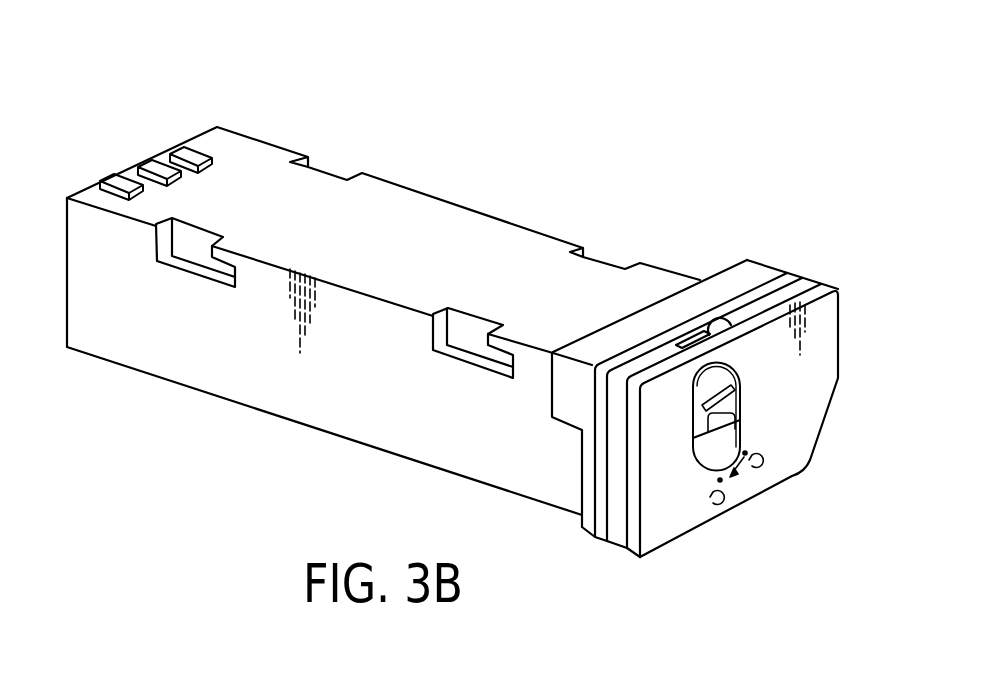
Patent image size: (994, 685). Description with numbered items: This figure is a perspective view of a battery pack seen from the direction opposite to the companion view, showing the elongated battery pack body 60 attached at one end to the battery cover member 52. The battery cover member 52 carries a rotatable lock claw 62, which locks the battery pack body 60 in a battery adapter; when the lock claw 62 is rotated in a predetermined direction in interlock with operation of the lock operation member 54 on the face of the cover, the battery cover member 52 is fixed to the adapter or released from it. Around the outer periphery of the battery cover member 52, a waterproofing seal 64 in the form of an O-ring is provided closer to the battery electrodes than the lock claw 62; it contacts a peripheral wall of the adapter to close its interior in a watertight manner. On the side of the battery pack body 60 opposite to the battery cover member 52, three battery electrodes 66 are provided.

The battery cover member 52 is at (658, 517).
The lock operation member 54 is at (733, 403).
The battery pack body 60 is at (497, 190).
The lock claw 62 is at (718, 318).
The waterproofing seal 64 is at (763, 285).
The battery electrodes 66 is at (112, 192).